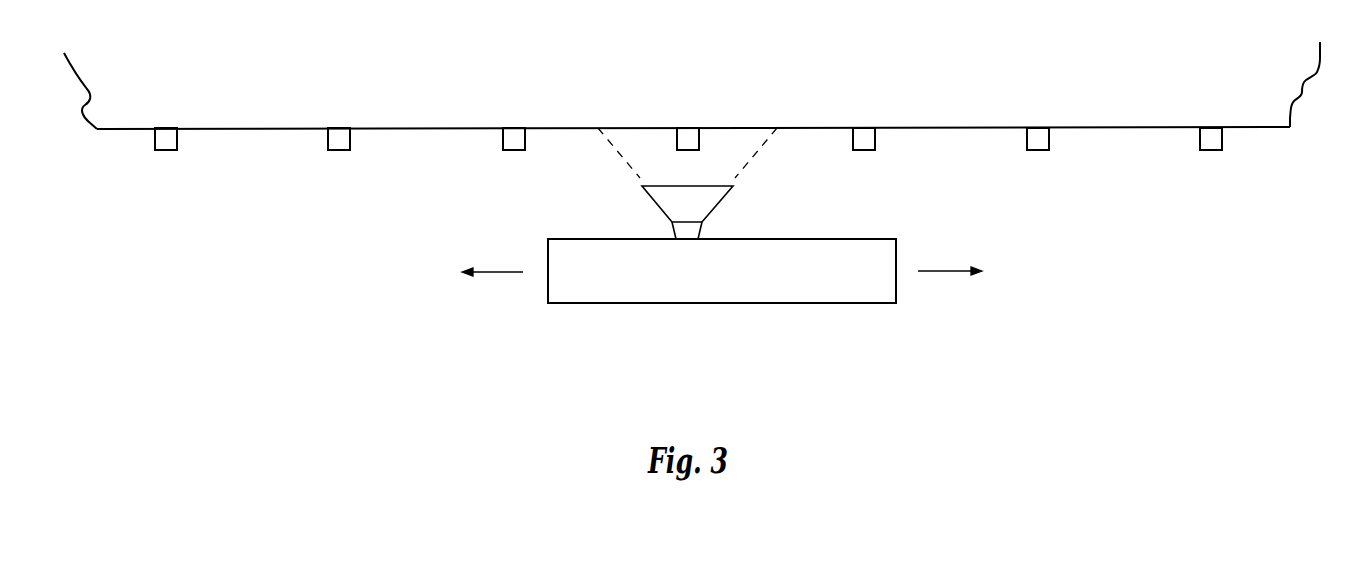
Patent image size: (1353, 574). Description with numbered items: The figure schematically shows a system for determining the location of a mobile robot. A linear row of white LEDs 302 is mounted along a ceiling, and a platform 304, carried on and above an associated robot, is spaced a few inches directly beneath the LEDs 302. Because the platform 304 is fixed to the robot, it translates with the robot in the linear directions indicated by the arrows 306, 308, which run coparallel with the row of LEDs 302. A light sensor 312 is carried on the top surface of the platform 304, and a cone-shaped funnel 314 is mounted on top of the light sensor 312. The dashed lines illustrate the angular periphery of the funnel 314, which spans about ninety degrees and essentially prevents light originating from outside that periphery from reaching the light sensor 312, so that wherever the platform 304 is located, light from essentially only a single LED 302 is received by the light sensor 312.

The white LEDs 302 is at (158, 151).
The platform 304 is at (744, 282).
The arrow (direction of travel) 306 is at (488, 272).
The arrow (direction of travel) 308 is at (958, 271).
The light sensor 312 is at (705, 231).
The cone-shaped funnel 314 is at (723, 203).